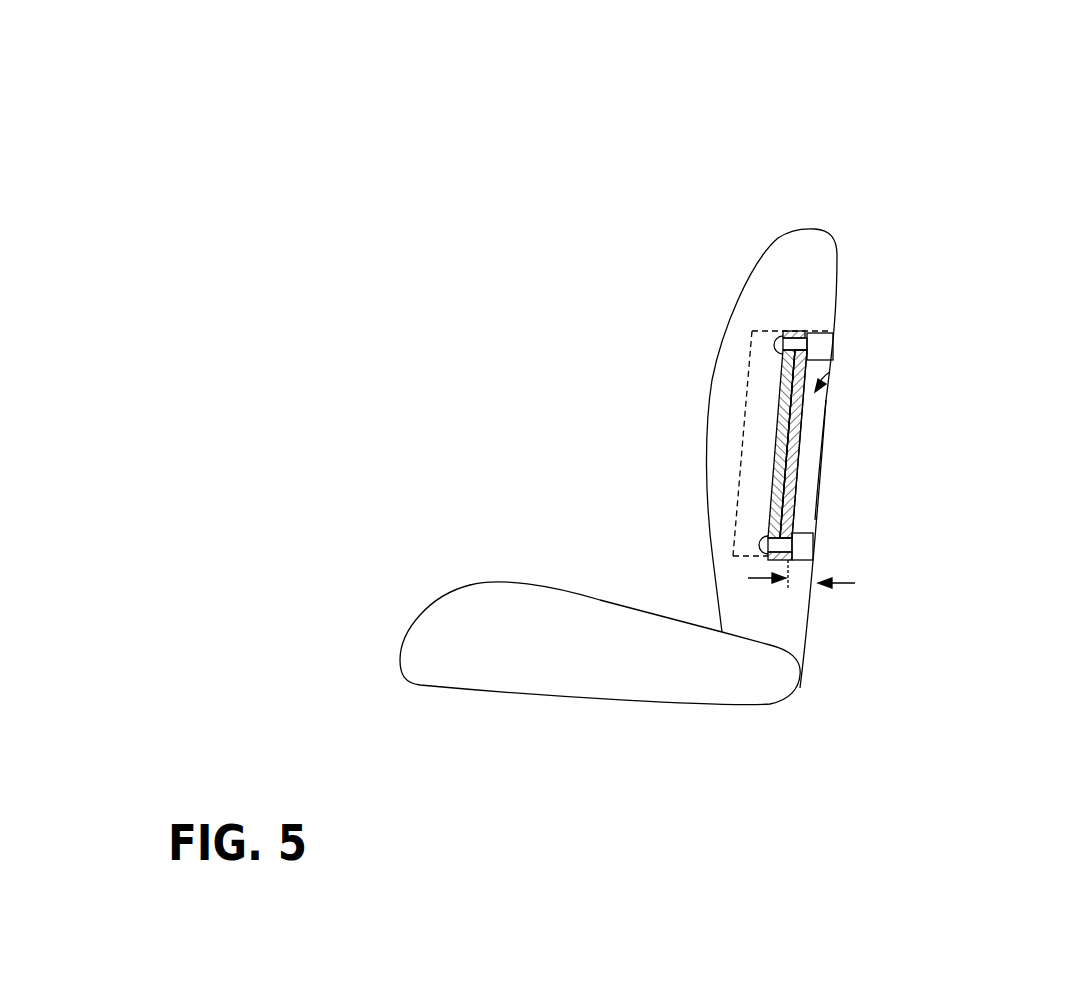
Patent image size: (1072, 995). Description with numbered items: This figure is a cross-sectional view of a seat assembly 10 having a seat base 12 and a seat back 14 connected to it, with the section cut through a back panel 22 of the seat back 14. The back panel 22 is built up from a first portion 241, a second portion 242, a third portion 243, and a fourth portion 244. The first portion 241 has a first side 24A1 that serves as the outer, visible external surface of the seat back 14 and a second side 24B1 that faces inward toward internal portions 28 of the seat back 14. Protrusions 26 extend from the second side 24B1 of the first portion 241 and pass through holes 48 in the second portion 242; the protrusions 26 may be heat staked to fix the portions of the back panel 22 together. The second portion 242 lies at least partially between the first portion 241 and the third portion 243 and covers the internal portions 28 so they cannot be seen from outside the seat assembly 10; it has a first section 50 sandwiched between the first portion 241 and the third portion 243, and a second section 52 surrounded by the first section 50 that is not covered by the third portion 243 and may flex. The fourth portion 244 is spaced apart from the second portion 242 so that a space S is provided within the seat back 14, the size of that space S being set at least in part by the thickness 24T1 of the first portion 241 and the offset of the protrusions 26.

The seat assembly 10 is at (595, 133).
The seat base 12 is at (467, 617).
The seat back 14 is at (812, 273).
The back panel 22 is at (848, 349).
The first side 24A1 is at (837, 338).
The second side 24B1 is at (797, 333).
The first portion 241 is at (815, 550).
The second portion 242 is at (797, 502).
The third portion 243 is at (775, 450).
The fourth portion 244 is at (822, 457).
The thickness 24T1 is at (840, 588).
The protrusions 26 is at (777, 347).
The internal portions 28 is at (762, 333).
The holes 48 is at (772, 510).
The first section 50 is at (800, 547).
The second section 52 is at (793, 444).
The space S is at (830, 372).